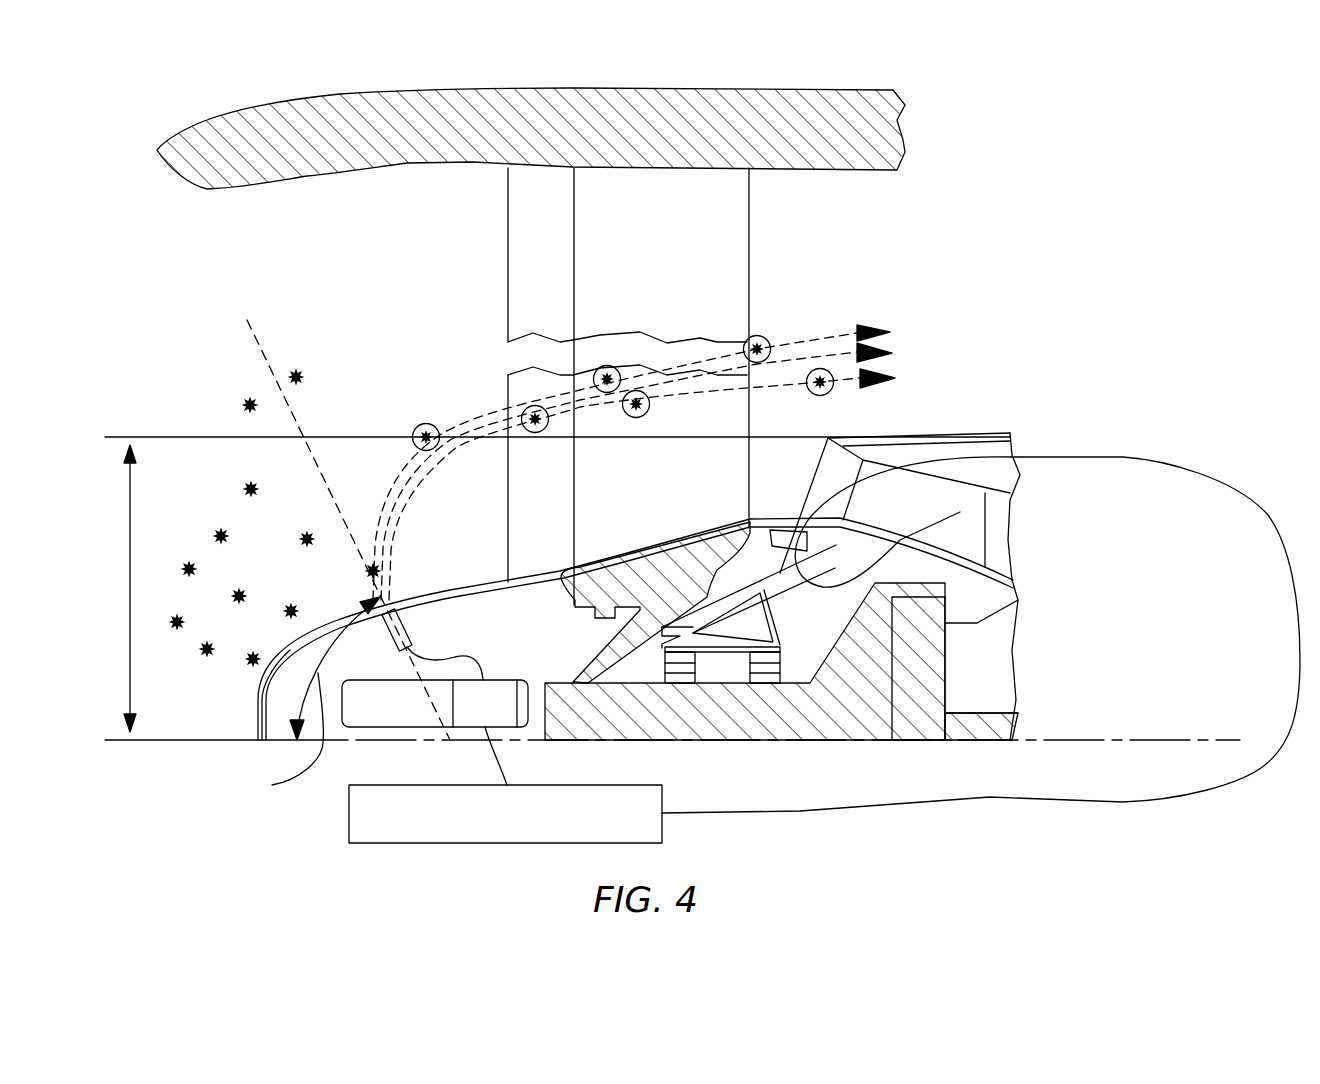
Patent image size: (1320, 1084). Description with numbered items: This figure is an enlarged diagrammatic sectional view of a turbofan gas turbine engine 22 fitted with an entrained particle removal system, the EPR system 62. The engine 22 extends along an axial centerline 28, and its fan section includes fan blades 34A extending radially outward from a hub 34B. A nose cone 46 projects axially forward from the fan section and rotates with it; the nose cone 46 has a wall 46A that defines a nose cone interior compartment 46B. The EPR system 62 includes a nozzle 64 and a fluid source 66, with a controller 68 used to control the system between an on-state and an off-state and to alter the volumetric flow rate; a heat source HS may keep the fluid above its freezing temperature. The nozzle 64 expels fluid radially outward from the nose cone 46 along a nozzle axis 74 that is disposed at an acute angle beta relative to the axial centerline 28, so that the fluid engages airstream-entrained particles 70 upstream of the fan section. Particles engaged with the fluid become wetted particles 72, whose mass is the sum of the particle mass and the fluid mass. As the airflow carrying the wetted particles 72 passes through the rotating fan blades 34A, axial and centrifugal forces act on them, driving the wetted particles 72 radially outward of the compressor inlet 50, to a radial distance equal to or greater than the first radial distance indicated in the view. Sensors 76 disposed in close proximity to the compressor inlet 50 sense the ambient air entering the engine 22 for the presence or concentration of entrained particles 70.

The gas turbine engine 22 is at (1055, 280).
The axial centerline 28 is at (1123, 740).
The fan blades 34A is at (683, 221).
The hub 34B is at (678, 591).
The nose cone 46 is at (447, 585).
The wall 46A is at (260, 713).
The nose cone interior compartment 46B is at (552, 655).
The compressor inlet 50 is at (826, 478).
The EPR system 62 is at (297, 848).
The nozzle 64 is at (415, 636).
The fluid source 66 is at (411, 716).
The controller 68 is at (612, 828).
The particles 70 is at (243, 488).
The wetted particles 72 is at (607, 366).
The nozzle axis 74 is at (256, 332).
The sensors 76 is at (800, 520).